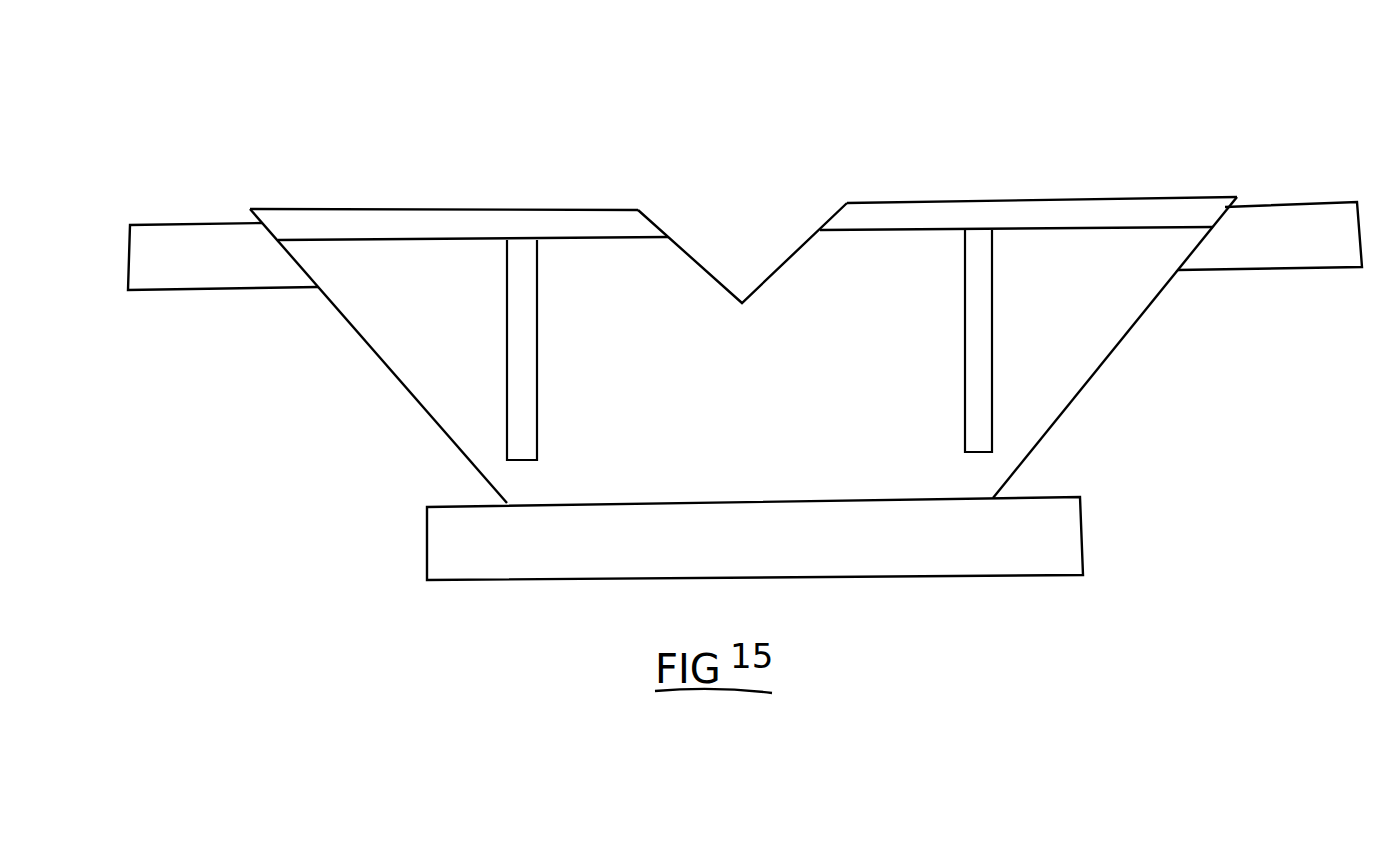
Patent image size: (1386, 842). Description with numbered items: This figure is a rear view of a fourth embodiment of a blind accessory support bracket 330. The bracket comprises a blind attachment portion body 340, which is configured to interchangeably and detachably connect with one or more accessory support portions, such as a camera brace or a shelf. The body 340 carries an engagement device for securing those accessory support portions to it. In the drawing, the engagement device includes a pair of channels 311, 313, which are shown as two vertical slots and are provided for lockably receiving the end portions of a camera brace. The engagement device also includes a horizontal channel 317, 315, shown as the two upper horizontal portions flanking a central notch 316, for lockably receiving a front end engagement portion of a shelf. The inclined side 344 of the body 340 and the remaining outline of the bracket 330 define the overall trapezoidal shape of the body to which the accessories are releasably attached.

The blind accessory support bracket 330 is at (968, 148).
The horizontal channel 317 is at (397, 218).
The horizontal channel 315 is at (1145, 212).
The V-shaped notch 316 is at (758, 277).
The left inclined wall 344 is at (380, 362).
The blind attachment portion body 340 is at (1087, 318).
The channel 313 is at (525, 373).
The channel 311 is at (973, 343).